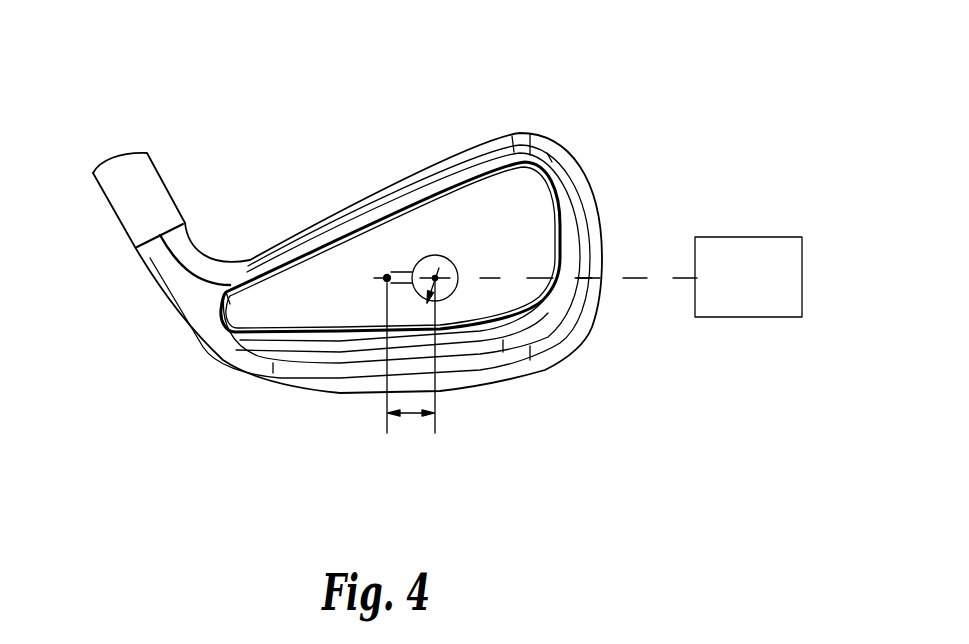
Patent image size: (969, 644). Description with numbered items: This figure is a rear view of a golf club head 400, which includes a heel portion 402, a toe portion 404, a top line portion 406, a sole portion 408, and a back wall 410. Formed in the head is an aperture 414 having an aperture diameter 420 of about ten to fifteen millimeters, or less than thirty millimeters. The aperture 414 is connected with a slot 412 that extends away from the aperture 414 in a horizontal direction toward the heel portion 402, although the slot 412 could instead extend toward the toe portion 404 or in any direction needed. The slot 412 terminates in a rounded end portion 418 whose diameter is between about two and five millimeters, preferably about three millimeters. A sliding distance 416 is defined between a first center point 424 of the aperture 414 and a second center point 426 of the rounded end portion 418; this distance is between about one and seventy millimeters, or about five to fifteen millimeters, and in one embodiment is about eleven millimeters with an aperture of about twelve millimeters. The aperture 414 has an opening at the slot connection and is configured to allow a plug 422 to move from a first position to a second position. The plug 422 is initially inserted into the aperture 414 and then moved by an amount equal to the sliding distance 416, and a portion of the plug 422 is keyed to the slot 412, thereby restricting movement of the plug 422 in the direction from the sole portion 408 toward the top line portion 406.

The golf club head 400 is at (765, 90).
The heel portion 402 is at (178, 358).
The toe portion 404 is at (628, 188).
The top line portion 406 is at (417, 98).
The sole portion 408 is at (540, 403).
The back wall 410 is at (312, 313).
The slot 412 is at (403, 272).
The aperture 414 is at (438, 279).
The sliding distance 416 is at (387, 413).
The rounded end portion 418 is at (386, 273).
The aperture diameter 420 is at (439, 268).
The plug 422 is at (717, 287).
The first center point 424 is at (457, 287).
The second center point 426 is at (383, 283).